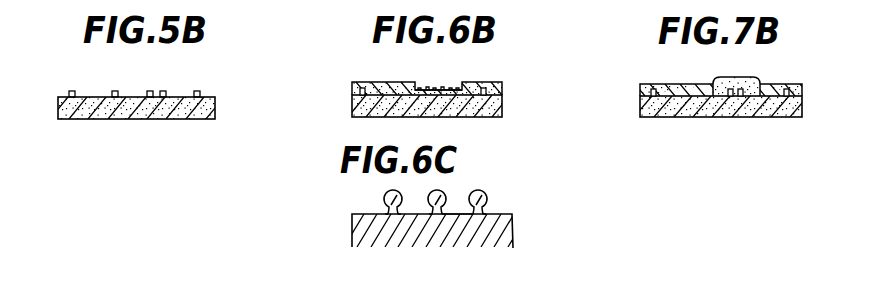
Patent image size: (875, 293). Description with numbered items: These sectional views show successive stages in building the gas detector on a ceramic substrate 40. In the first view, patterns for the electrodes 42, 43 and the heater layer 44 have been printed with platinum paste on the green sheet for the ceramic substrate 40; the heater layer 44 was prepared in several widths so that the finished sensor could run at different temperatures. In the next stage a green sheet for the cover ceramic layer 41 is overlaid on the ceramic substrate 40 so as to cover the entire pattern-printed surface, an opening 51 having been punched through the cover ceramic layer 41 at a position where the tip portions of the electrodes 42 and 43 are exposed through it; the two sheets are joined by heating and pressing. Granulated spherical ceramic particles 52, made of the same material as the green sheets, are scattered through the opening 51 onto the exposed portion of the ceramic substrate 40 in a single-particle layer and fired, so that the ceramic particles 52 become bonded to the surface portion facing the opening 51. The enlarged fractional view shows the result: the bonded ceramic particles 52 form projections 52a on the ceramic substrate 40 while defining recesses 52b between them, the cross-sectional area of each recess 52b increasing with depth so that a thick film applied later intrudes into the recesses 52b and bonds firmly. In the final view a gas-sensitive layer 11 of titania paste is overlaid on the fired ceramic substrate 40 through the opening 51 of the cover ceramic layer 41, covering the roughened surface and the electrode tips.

In FIG. 5B, the ceramic substrate 40 is at (215, 120).
In FIG. 6B, the ceramic substrate 40 is at (478, 112).
In FIG. 6C, the ceramic substrate 40 is at (363, 238).
In FIG. 7B, the ceramic substrate 40 is at (785, 114).
In FIG. 6B, the cover ceramic layer 41 is at (500, 80).
In FIG. 7B, the cover ceramic layer 41 is at (803, 85).
In FIG. 5B, the electrode 42 is at (150, 91).
In FIG. 5B, the electrode 43 is at (165, 90).
In FIG. 5B, the heater layer 44 is at (85, 77).
In FIG. 6B, the opening 51 is at (423, 88).
In FIG. 6B, the granulated spherical ceramic particles 52 is at (435, 88).
In FIG. 6C, the projections 52a is at (486, 194).
In FIG. 6C, the recesses 52b is at (447, 208).
In FIG. 7B, the gas-sensitive layer 11 is at (750, 77).